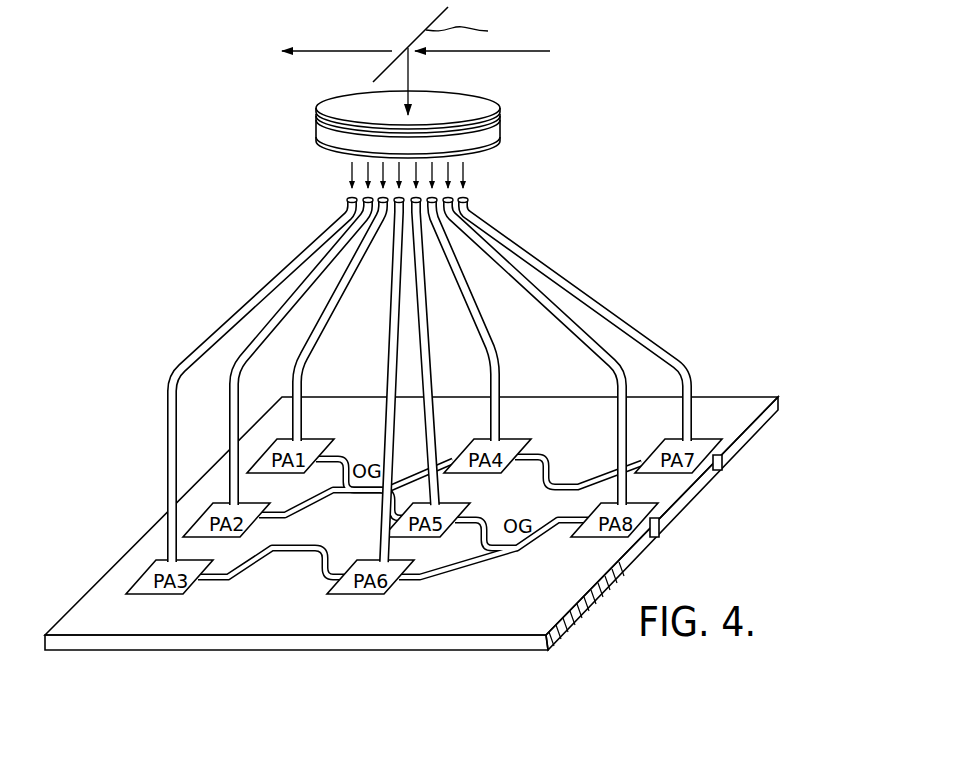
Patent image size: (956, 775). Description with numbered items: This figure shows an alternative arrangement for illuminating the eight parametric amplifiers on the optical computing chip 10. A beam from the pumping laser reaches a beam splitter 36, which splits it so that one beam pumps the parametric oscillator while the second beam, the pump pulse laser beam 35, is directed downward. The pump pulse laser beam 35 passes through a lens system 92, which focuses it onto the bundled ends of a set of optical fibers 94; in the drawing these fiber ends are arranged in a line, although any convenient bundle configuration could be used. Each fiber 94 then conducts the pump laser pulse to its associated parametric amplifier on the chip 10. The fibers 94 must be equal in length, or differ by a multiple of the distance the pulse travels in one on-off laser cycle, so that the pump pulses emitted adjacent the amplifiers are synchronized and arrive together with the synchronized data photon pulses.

The optical computing chip 10 is at (195, 617).
The pump pulse laser beam 35 is at (410, 73).
The beam splitter 36 is at (416, 37).
The lens system 92 is at (303, 93).
The optical fibers 94 is at (297, 303).